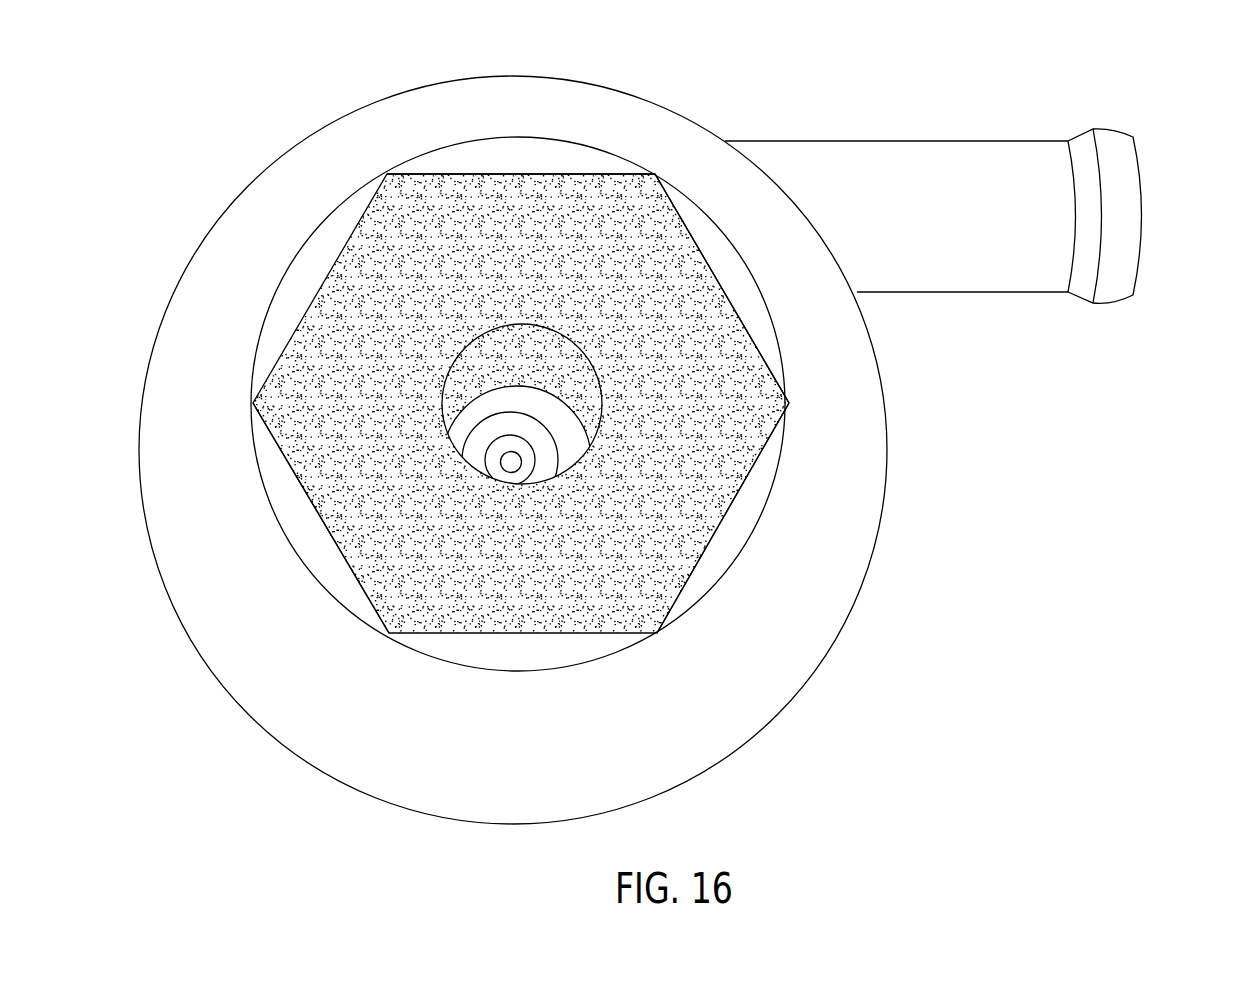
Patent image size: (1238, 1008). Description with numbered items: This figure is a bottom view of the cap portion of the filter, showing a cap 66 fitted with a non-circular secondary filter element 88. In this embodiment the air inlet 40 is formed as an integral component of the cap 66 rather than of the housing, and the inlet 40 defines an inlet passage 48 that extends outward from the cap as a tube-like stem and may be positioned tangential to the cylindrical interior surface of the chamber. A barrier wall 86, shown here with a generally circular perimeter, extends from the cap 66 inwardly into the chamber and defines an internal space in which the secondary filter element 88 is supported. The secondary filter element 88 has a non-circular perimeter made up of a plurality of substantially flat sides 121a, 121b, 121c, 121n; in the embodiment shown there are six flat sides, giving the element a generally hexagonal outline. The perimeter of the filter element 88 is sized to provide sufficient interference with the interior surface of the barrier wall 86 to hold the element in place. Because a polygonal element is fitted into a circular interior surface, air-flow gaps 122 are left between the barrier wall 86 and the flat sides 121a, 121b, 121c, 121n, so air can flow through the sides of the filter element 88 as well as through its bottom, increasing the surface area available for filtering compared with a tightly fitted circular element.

The inlet 40 is at (1044, 99).
The inlet passage 48 is at (1164, 227).
The cap 66 is at (165, 152).
The barrier wall 86 is at (530, 670).
The secondary filter element 88 is at (687, 224).
The air-flow gaps 122 is at (565, 464).
The flat side 121a is at (520, 168).
The flat side 121b is at (760, 325).
The flat side 121c is at (742, 507).
The flat side 121n is at (310, 548).